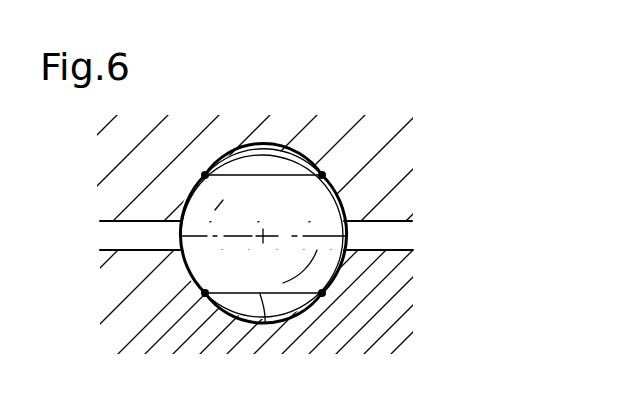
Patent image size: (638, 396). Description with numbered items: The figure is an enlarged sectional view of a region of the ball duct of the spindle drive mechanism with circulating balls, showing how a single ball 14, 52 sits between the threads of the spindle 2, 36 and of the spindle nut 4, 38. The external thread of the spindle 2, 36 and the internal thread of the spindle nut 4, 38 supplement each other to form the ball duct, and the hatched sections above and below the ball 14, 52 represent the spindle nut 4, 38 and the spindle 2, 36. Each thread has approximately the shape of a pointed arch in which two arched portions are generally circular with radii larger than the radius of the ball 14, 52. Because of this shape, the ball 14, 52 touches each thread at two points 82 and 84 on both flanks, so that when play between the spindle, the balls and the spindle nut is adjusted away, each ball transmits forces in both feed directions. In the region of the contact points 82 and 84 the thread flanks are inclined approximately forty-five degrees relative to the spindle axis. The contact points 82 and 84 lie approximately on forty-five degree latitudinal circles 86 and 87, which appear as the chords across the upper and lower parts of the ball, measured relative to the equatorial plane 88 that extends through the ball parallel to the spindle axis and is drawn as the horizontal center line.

The spindle 2 is at (268, 302).
The spindle 36 is at (403, 300).
The spindle nut 4 is at (261, 168).
The spindle nut 38 is at (394, 159).
The ball 14 is at (263, 196).
The ball 52 is at (257, 168).
The contact point 82 is at (203, 175).
The contact point 84 is at (204, 294).
The latitudinal circle 86 is at (276, 175).
The latitudinal circle 87 is at (263, 295).
The equatorial plane 88 is at (280, 236).